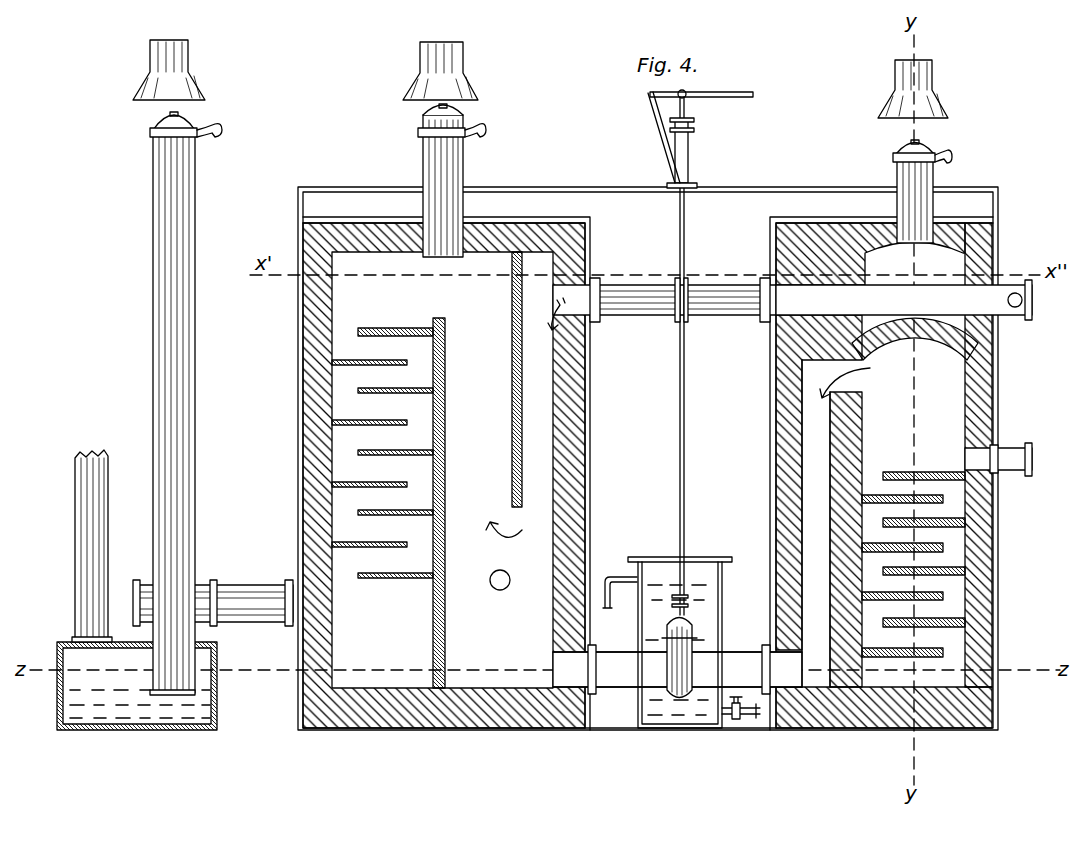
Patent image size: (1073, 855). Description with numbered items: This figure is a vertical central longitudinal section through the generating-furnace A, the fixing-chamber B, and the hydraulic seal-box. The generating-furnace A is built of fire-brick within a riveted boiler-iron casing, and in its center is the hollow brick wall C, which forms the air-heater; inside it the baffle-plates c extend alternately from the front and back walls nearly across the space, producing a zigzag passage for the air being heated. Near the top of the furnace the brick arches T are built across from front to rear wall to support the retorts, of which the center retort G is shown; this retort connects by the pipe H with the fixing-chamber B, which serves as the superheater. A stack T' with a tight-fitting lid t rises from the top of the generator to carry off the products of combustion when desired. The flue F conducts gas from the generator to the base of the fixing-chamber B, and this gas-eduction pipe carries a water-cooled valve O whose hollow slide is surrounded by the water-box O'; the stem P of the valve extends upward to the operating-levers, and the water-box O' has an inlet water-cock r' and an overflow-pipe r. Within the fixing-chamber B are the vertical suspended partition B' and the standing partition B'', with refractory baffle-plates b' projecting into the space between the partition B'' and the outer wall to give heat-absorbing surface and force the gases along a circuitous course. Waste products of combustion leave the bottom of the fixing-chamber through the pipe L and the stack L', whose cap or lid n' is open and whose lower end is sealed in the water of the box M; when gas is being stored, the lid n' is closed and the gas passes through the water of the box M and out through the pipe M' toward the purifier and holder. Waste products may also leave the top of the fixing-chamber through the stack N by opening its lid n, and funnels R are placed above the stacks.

The generating-furnace A is at (998, 378).
The fixing-chamber B is at (441, 475).
The vertical suspended partition B' is at (500, 379).
The standing partition B'' is at (477, 503).
The baffle-plates b' is at (382, 453).
The hollow brick wall C is at (965, 548).
The baffle-plates c is at (913, 564).
The brick arches T is at (899, 358).
The stack T' is at (901, 191).
The tight-fitting lid t is at (918, 142).
The flue F is at (691, 527).
The pipe H is at (662, 308).
The center retort G is at (904, 300).
The valve stems P is at (700, 352).
The water-cooled valves O is at (673, 646).
The water-box O' is at (691, 642).
The overflow-pipe r is at (620, 592).
The inlet water-cock r' is at (742, 700).
The box M is at (137, 686).
The pipe M' is at (106, 546).
The pipe L is at (213, 589).
The stack L' is at (181, 403).
The cap or lid n' is at (175, 121).
The stack N is at (430, 180).
The lid n is at (444, 118).
The funnels R is at (547, 79).